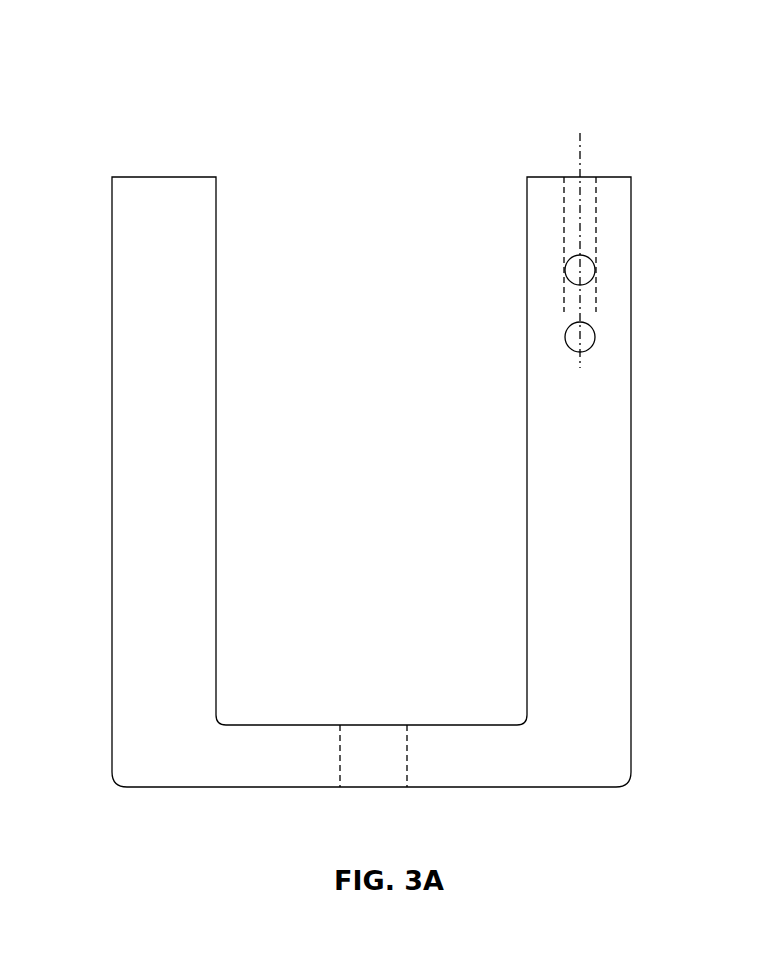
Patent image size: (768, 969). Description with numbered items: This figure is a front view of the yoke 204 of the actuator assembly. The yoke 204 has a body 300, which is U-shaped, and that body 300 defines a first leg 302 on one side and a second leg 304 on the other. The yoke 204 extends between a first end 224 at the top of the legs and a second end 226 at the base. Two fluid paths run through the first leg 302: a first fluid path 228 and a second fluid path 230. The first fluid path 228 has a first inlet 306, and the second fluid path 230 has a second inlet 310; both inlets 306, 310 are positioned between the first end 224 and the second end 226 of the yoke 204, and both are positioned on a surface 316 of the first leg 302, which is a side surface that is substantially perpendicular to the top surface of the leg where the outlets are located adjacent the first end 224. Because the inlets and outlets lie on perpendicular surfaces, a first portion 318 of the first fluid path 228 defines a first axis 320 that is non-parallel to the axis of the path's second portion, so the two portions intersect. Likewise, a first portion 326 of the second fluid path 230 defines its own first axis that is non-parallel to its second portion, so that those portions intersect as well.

The yoke 204 is at (650, 137).
The first end 224 is at (203, 172).
The second end 226 is at (185, 791).
The first fluid path 228 is at (585, 335).
The second fluid path 230 is at (582, 270).
The body 300 is at (137, 720).
The first leg 302 is at (545, 177).
The second leg 304 is at (130, 177).
The first inlet 306 is at (597, 343).
The second inlet 310 is at (592, 280).
The surface 316 is at (600, 630).
The first portion 318 is at (578, 310).
The first axis 320 is at (578, 150).
The first portion 326 is at (578, 228).